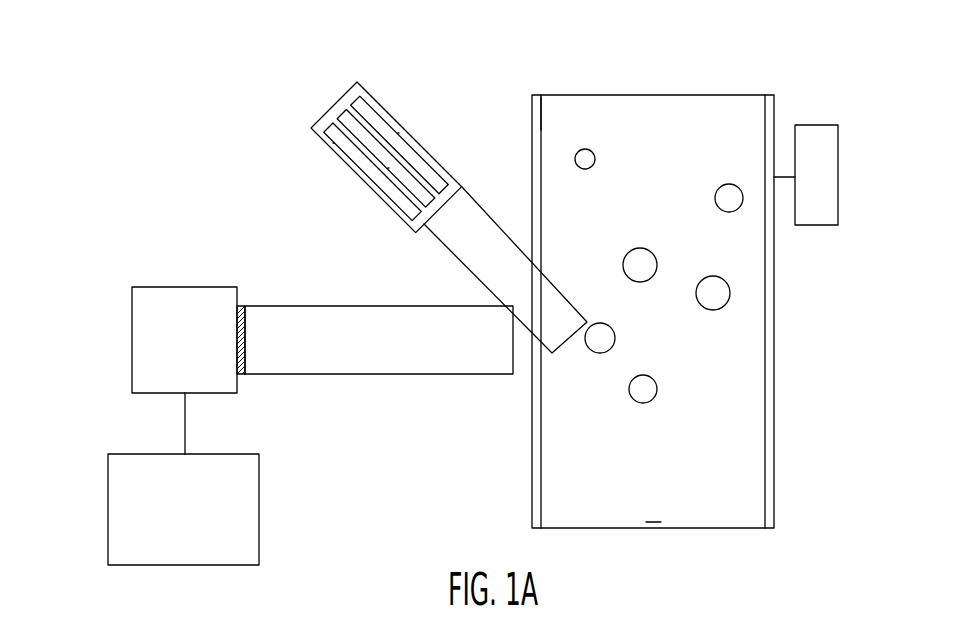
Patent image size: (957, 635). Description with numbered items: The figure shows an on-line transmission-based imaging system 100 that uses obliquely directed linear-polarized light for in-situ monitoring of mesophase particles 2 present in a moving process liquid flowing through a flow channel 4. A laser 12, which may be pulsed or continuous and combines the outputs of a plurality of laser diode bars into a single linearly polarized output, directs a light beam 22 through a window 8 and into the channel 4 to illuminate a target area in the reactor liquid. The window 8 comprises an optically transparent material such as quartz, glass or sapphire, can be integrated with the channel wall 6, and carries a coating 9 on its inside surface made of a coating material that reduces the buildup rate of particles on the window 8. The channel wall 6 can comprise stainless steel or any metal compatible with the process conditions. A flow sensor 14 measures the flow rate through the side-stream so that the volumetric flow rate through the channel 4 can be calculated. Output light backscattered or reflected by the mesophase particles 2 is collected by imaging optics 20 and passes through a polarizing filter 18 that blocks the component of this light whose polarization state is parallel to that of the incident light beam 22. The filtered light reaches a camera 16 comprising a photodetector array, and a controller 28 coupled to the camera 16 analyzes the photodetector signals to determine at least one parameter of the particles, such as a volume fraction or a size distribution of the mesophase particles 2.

The on-line transmission-based imaging system 100 is at (245, 199).
The laser 12 is at (408, 125).
The light beam 22 is at (486, 214).
The channel wall 6 is at (649, 264).
The window 8 is at (532, 503).
The coating 9 is at (541, 117).
The flow channel 4 is at (653, 491).
The mesophase particles 2 is at (615, 333).
The flow sensor 14 is at (829, 189).
The imaging optics 20 is at (418, 356).
The polarizing filter 18 is at (241, 376).
The camera 16 is at (197, 374).
The controller 28 is at (108, 494).